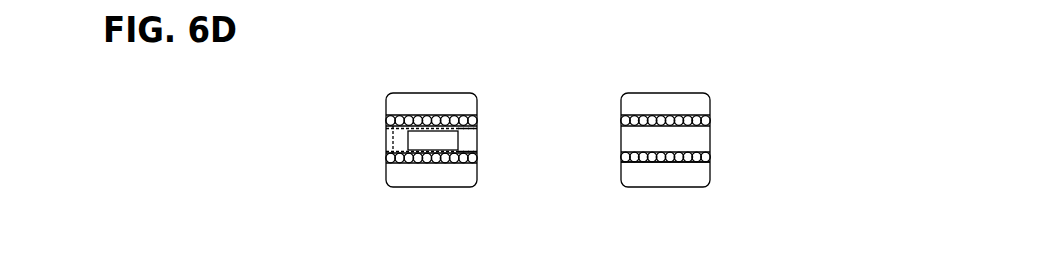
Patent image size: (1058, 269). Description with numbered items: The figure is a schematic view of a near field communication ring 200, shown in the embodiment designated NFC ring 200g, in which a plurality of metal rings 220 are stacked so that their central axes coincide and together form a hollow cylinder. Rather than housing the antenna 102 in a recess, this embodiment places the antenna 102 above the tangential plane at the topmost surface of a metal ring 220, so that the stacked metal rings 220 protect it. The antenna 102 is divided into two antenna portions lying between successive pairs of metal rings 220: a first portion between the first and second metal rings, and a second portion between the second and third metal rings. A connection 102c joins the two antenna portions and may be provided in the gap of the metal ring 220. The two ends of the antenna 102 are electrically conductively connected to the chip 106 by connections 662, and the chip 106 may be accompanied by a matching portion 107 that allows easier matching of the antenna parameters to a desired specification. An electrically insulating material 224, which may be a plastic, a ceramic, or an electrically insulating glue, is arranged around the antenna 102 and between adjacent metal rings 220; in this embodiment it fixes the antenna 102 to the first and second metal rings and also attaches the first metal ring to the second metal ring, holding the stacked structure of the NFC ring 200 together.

The connection 102c is at (395, 133).
The chip 106 is at (330, 142).
The matching portion 107 is at (420, 142).
The metal ring 220 is at (371, 162).
The connections 662 is at (460, 131).
The near field communication ring 200 is at (721, 133).
The NFC ring 200g is at (768, 70).
The antenna 102 is at (747, 130).
The electrically insulating material 224 is at (710, 154).